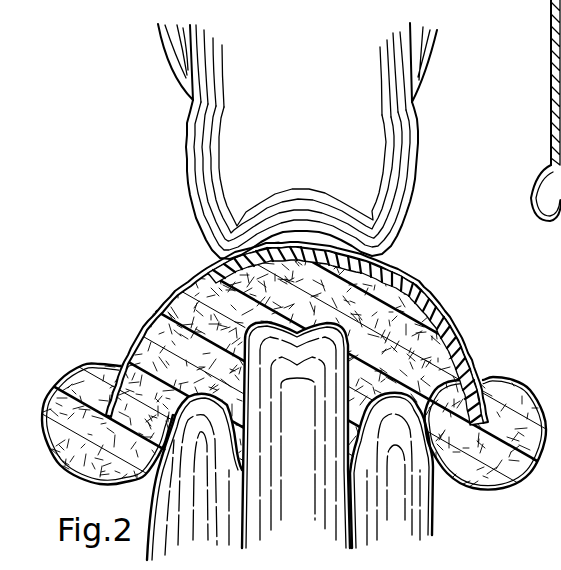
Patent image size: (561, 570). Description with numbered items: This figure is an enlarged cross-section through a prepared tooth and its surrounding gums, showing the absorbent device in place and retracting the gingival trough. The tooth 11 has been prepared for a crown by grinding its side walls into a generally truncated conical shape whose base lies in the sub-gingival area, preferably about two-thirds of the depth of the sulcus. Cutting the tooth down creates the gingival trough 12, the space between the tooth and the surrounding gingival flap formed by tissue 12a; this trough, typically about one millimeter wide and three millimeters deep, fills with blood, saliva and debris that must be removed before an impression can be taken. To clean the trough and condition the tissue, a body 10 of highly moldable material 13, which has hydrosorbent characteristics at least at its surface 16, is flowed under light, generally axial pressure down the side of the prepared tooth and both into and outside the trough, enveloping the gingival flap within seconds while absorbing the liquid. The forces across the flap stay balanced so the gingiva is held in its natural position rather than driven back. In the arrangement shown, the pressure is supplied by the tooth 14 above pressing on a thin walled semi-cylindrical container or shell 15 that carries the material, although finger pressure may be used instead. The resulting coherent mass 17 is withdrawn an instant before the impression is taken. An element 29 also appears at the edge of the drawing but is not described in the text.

The body 10 is at (162, 293).
The tooth 11 is at (330, 527).
The gingival trough 12 is at (232, 447).
The tissue 12a is at (415, 502).
The moldable material 13 is at (147, 347).
The tooth 14 is at (396, 232).
The container or shell 15 is at (443, 308).
The surface 16 is at (72, 473).
The coherent mass 17 is at (433, 368).
The vertical strip 29 is at (550, 52).